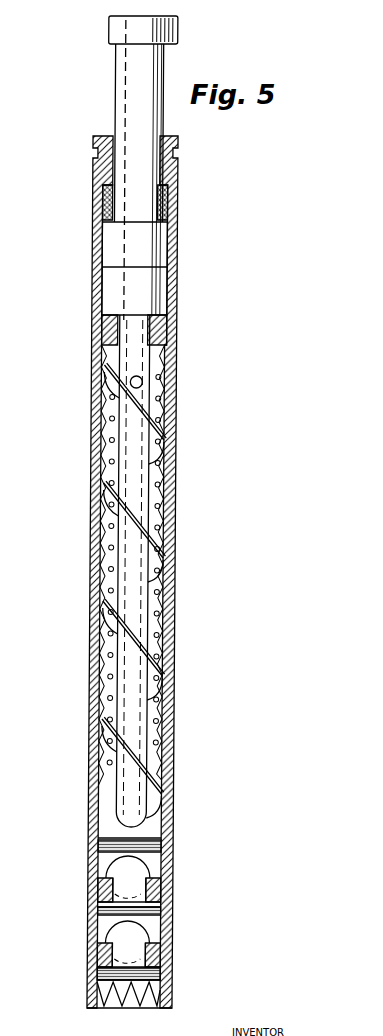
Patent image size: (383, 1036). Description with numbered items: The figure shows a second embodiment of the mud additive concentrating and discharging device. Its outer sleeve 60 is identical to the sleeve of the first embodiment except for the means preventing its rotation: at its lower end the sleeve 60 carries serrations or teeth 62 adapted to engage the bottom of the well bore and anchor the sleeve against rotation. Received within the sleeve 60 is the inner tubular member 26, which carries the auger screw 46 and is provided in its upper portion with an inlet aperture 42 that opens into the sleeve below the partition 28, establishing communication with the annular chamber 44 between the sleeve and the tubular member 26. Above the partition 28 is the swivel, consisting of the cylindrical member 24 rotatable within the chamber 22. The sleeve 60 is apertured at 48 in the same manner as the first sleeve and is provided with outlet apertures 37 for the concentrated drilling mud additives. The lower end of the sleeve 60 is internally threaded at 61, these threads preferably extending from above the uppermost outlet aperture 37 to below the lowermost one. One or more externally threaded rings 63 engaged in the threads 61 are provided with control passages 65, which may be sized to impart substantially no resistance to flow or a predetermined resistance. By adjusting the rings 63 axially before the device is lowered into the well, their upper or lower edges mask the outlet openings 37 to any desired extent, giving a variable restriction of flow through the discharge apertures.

The chamber 22 is at (179, 237).
The cylindrical member 24 is at (165, 286).
The inner tubular member 26 is at (147, 505).
The partition 28 is at (106, 342).
The outlet apertures 37 is at (146, 937).
The inlet aperture 42 is at (146, 383).
The annular chamber 44 is at (102, 365).
The auger screw 46 is at (110, 503).
The apertures 48 is at (176, 633).
The sleeve 60 is at (178, 825).
The internal threads 61 is at (172, 846).
The serrations 62 is at (109, 987).
The externally threaded rings 63 is at (108, 953).
The control passages 65 is at (151, 960).